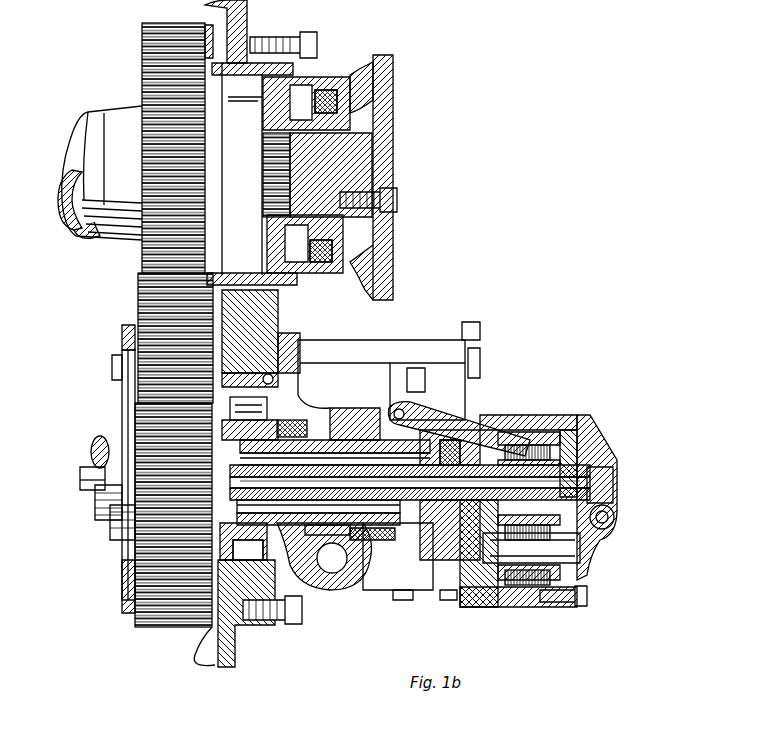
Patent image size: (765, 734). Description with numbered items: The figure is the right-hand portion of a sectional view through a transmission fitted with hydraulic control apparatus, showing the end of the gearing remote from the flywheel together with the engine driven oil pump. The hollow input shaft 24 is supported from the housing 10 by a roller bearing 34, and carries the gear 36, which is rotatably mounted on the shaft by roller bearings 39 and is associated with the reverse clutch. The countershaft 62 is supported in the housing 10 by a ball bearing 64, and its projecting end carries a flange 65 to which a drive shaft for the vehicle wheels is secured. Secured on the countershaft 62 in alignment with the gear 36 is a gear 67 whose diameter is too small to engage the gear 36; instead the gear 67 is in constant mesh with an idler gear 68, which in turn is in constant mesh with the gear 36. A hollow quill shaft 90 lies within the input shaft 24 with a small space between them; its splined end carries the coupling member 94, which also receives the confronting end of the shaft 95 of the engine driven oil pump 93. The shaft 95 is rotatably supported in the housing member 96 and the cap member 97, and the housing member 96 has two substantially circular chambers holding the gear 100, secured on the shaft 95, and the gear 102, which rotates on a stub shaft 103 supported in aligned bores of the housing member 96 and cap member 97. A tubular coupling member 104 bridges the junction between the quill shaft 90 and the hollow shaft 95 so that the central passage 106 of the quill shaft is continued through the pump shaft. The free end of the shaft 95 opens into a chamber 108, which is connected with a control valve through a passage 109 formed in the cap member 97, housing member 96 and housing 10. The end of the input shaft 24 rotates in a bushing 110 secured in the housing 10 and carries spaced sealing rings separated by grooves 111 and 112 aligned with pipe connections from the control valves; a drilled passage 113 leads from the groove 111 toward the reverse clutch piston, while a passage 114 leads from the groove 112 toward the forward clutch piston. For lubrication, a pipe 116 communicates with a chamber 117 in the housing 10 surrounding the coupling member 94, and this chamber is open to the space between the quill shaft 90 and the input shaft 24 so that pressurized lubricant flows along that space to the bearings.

The housing 10 is at (270, 620).
The input shaft 24 is at (110, 525).
The roller bearing 34 is at (268, 425).
The gear 36 is at (171, 617).
The roller bearings 39 is at (215, 408).
The countershaft 62 is at (88, 118).
The ball bearing 64 is at (283, 80).
The flange 65 is at (394, 73).
The gear 67 is at (146, 47).
The idler gear 68 is at (157, 330).
The quill shaft 90 is at (100, 500).
The oil pump 93 is at (622, 505).
The coupling member 94 is at (425, 445).
The shaft 95 is at (487, 468).
The housing member 96 is at (528, 418).
The cap member 97 is at (568, 418).
The gear 100 is at (548, 455).
The gear 102 is at (525, 588).
The stub shaft 103 is at (575, 548).
The tubular coupling member 104 is at (400, 535).
The passage 106 is at (352, 478).
The chamber 108 is at (600, 480).
The passage 109 is at (585, 460).
The bushing 110 is at (352, 540).
The groove 111 is at (289, 557).
The groove 112 is at (370, 540).
The passage 113 is at (324, 556).
The passage 114 is at (318, 455).
The pipe 116 is at (432, 545).
The chamber 117 is at (455, 440).